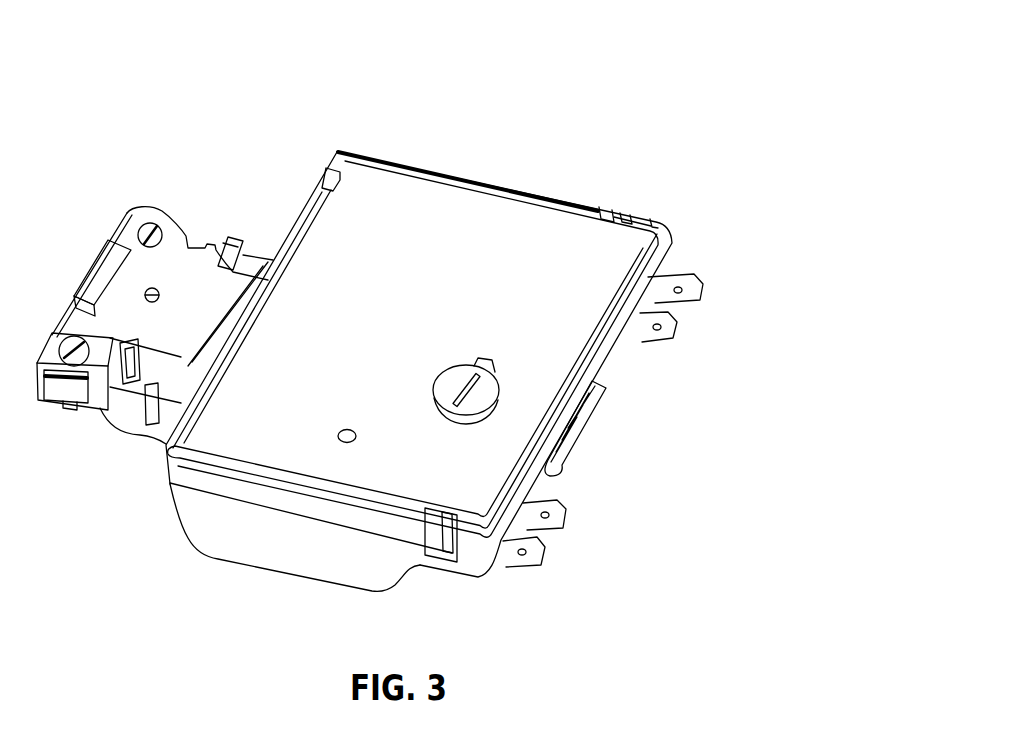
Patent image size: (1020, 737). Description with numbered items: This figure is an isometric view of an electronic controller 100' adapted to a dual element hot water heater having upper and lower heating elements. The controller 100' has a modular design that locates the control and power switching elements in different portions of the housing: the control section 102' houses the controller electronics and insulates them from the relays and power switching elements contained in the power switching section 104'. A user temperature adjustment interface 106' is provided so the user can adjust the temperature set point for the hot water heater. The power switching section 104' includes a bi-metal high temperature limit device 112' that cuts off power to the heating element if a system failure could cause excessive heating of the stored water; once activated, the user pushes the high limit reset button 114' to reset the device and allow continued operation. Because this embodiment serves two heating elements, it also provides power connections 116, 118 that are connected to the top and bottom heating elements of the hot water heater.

The electronic controller 100' is at (440, 328).
The control section 102' is at (311, 570).
The power switching section 104' is at (155, 323).
The user temperature adjustment interface 106' is at (567, 391).
The bi-metal high temperature limit device 112' is at (199, 184).
The high limit reset button 114' is at (121, 223).
The power connection 116 is at (703, 320).
The power connection 118 is at (565, 548).